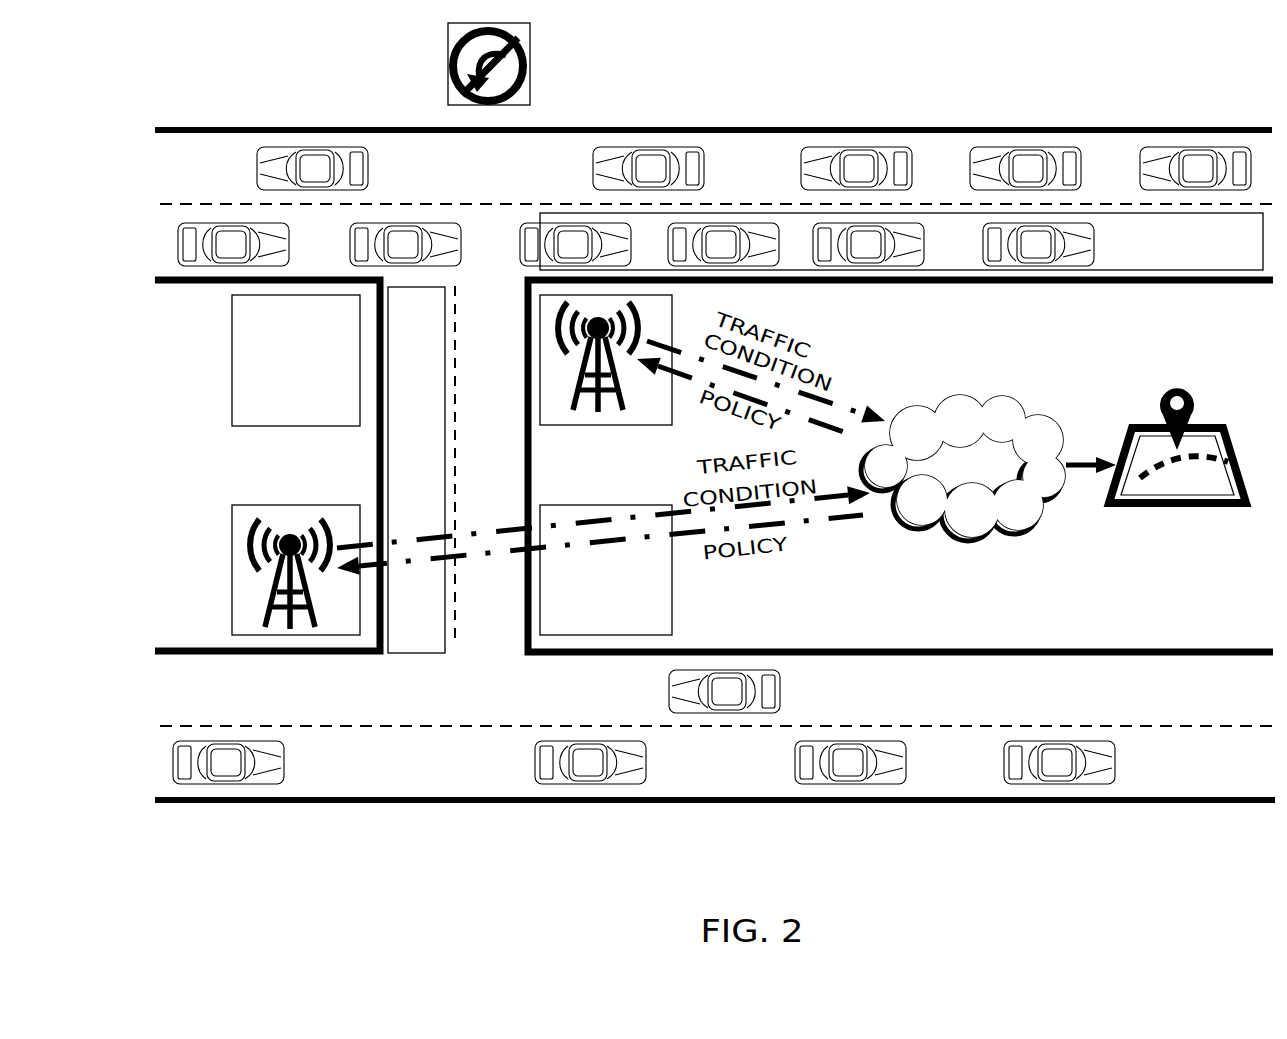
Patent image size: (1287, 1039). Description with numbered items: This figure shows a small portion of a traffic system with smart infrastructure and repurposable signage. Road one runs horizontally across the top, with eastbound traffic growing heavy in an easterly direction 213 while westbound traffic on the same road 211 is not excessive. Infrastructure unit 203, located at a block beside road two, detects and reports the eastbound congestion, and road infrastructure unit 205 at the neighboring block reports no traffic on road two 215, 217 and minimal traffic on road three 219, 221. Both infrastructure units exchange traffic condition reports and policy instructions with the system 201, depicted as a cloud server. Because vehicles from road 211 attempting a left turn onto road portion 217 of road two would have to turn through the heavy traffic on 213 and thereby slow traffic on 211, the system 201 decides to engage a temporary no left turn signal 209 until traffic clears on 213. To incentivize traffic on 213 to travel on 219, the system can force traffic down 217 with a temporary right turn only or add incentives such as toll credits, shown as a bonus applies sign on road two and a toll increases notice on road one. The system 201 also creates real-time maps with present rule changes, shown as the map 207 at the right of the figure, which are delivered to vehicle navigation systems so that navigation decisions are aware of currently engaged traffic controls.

The system 201 is at (975, 538).
The infrastructure unit 203 is at (653, 303).
The road infrastructure unit 205 is at (268, 587).
The navigation map / user device 207 is at (1177, 505).
The temporary no left turn signal 209 is at (433, 58).
The westbound traffic on road 1 211 is at (1107, 167).
The easterly direction on road 1 213 is at (1100, 267).
The road 2 215 is at (510, 470).
The road portion of road 2 217 is at (402, 355).
The road 3 219 is at (493, 763).
The road 3 221 is at (1065, 680).